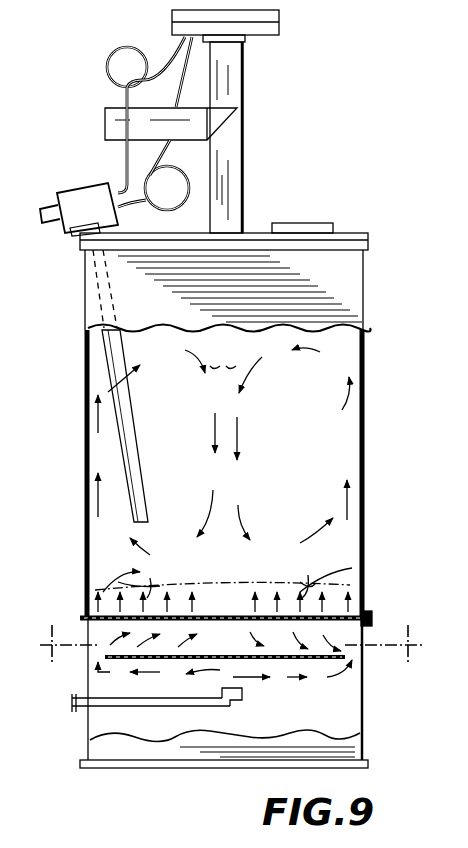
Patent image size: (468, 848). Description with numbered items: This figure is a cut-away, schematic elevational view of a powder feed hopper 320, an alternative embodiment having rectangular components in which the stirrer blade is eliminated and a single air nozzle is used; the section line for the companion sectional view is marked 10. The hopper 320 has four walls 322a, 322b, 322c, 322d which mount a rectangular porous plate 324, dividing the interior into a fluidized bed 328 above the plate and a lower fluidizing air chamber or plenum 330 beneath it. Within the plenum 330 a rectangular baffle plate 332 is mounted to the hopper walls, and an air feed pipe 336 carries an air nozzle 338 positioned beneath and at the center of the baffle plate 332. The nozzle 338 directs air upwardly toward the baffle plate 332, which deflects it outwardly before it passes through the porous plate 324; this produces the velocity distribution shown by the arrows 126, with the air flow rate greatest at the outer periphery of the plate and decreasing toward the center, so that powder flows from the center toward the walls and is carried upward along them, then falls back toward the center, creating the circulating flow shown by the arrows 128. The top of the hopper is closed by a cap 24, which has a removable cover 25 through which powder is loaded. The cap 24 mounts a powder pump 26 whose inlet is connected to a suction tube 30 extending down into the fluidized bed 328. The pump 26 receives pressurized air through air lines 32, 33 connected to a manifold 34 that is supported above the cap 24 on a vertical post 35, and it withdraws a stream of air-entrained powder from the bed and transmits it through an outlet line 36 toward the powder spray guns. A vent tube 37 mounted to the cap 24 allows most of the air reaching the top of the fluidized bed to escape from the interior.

The powder feed hopper 10 is at (232, 626).
The cap 24 is at (342, 242).
The cover 25 is at (304, 222).
The powder pump 26 is at (78, 196).
The suction tube 30 is at (130, 433).
The air line 32 is at (108, 78).
The air line 33 is at (187, 190).
The manifold 34 is at (282, 22).
The vertical post 35 is at (244, 78).
The outlet line 36 is at (40, 236).
The vent tube 37 is at (105, 125).
The arrows 126 is at (227, 577).
The arrows 128 is at (223, 368).
The powder feed hopper 320 is at (414, 126).
The wall 322a is at (88, 388).
The wall 322b is at (305, 465).
The wall 322c is at (364, 380).
The wall 322d is at (342, 287).
The porous plate 324 is at (218, 610).
The fluidized bed 328 is at (318, 418).
The fluidizing air chamber or plenum 330 is at (345, 712).
The baffle plate 332 is at (283, 663).
The air feed pipe 336 is at (112, 713).
The air nozzle 338 is at (240, 710).